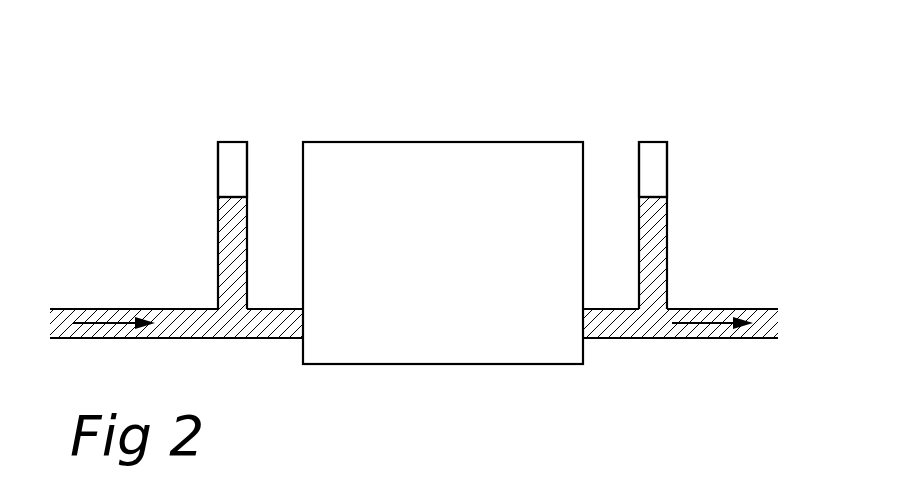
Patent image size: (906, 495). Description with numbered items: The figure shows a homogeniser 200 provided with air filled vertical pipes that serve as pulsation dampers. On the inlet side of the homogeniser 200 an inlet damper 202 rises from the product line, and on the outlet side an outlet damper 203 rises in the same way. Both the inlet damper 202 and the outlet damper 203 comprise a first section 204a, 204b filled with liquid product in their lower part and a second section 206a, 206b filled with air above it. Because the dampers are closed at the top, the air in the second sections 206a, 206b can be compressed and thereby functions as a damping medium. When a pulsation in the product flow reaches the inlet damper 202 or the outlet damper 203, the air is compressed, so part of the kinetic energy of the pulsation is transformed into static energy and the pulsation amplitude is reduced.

The homogeniser 200 is at (410, 165).
The inlet damper 202 is at (228, 118).
The outlet damper 203 is at (643, 128).
The first section 204a is at (218, 260).
The first section 204b is at (667, 253).
The second section 206a is at (228, 170).
The second section 206b is at (652, 170).